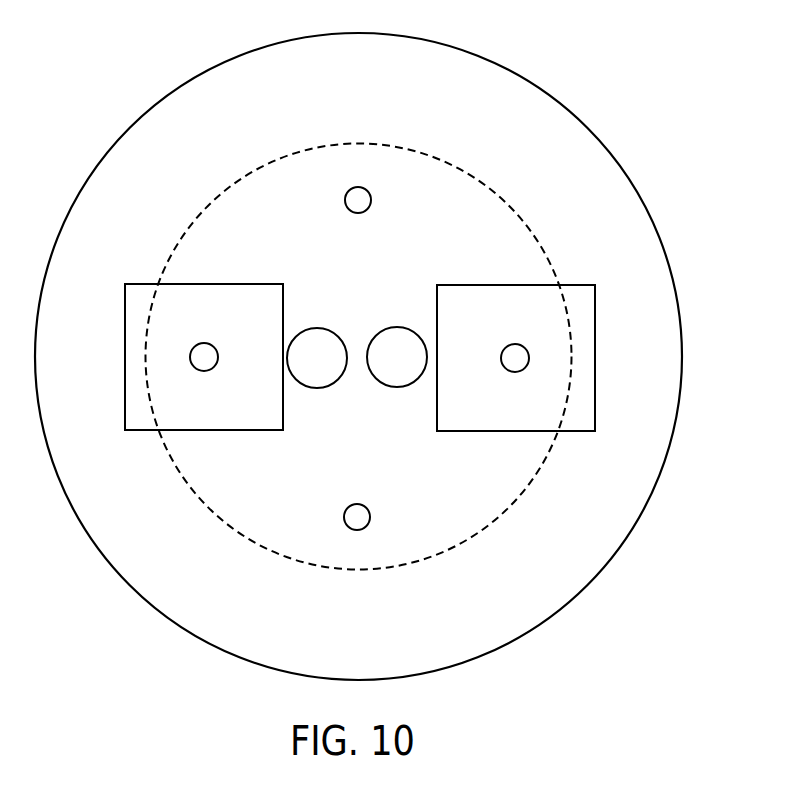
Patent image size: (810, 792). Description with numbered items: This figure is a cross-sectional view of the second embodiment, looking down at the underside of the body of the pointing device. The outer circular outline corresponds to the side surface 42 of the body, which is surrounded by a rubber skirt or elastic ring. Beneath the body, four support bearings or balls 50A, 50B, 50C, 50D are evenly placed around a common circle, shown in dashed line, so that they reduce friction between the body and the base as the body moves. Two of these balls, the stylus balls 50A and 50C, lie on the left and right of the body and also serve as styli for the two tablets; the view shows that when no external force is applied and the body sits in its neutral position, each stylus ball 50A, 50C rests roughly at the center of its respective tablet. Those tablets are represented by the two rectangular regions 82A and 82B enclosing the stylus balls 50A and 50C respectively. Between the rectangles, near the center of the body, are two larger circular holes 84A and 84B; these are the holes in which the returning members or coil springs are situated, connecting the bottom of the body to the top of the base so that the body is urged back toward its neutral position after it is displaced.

The side surface 42 is at (210, 512).
The stylus ball 50A is at (195, 365).
The ball 50B is at (362, 195).
The stylus ball 50C is at (518, 368).
The ball 50D is at (350, 523).
The rectangular pad 82A is at (140, 298).
The rectangular pad 82B is at (582, 300).
The hole 84A is at (314, 368).
The hole 84B is at (398, 368).